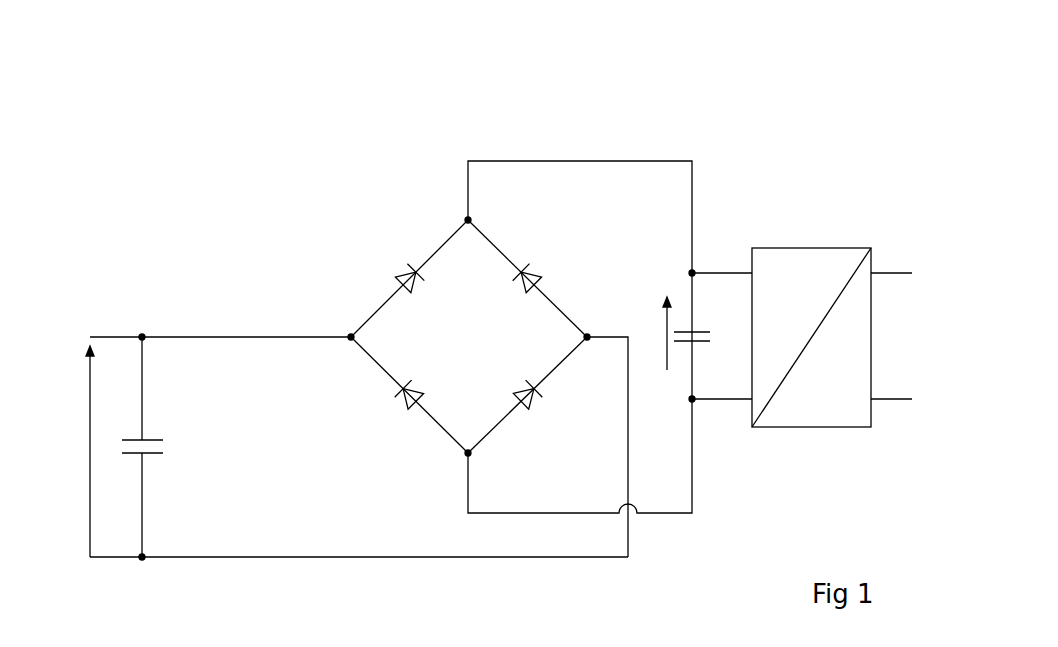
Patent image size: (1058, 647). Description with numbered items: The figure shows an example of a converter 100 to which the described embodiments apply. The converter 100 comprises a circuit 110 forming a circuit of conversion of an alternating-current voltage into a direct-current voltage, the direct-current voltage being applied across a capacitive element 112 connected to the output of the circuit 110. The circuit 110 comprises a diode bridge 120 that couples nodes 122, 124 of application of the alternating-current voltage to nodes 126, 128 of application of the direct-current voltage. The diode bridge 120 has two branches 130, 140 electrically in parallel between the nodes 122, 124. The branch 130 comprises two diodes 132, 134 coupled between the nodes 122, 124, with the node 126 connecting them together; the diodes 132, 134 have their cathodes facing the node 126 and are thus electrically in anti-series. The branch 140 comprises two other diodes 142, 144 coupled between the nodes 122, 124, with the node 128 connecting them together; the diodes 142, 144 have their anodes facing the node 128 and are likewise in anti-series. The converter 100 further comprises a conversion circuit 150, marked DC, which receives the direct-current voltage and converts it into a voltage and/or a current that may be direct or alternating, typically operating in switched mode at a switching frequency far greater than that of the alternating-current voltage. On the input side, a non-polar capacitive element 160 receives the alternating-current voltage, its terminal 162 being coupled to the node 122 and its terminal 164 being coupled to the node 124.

The converter 100 is at (157, 86).
The circuit 110 is at (203, 228).
The capacitive element 112 is at (688, 330).
The diode bridge 120 is at (320, 162).
The node 122 is at (350, 335).
The node 124 is at (587, 341).
The node 126 is at (468, 220).
The node 128 is at (468, 453).
The branch 130 is at (379, 261).
The diode 132 is at (402, 278).
The diode 134 is at (535, 268).
The branch 140 is at (390, 414).
The diode 142 is at (412, 407).
The diode 144 is at (528, 405).
The conversion circuit 150 is at (790, 248).
The capacitive element 160 is at (158, 455).
The terminal 162 is at (143, 392).
The terminal 164 is at (143, 523).